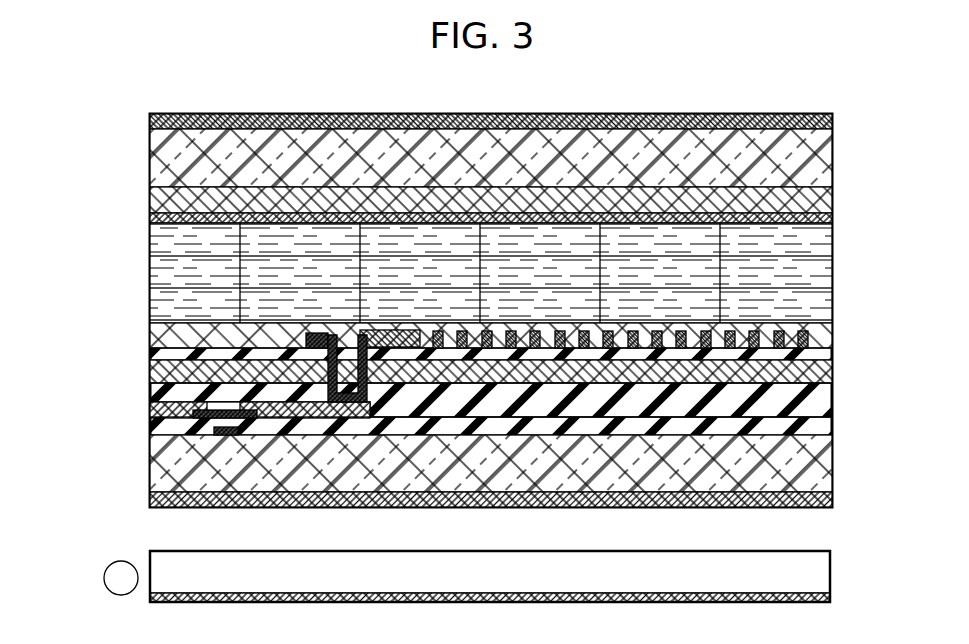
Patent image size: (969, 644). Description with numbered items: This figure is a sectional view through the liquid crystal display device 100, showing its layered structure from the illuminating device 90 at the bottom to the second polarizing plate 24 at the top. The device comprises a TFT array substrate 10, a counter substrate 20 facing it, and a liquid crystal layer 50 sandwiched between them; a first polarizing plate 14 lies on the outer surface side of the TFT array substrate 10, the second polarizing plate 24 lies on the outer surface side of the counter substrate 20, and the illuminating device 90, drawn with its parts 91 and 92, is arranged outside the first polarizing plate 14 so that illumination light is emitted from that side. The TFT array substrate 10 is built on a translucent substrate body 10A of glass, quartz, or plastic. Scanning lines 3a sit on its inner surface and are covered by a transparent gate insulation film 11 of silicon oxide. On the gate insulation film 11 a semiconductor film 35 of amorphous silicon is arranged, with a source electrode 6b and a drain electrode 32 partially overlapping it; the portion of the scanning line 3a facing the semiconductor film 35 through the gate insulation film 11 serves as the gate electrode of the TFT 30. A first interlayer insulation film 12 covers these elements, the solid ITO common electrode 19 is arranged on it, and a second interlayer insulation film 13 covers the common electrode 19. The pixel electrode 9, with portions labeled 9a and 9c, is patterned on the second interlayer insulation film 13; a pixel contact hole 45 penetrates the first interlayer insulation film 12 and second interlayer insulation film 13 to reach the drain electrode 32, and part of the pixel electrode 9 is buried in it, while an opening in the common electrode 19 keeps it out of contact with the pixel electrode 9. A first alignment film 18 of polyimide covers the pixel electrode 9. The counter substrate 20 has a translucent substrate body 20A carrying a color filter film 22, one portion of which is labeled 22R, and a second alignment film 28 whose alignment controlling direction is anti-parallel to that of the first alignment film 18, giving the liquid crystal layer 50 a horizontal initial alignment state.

The liquid crystal display device 100 is at (657, 104).
The second polarizing plate 24 is at (833, 119).
The substrate body 20A is at (833, 164).
The counter substrate 20 is at (527, 172).
The color filter film 22 is at (551, 200).
The red color filter 22R is at (824, 203).
The second alignment film 28 is at (826, 222).
The liquid crystal layer 50 is at (833, 273).
The first alignment film 18 is at (827, 336).
The second interlayer insulation film 13 is at (829, 353).
The first interlayer insulation film 12 is at (829, 398).
The gate insulation film 11 is at (829, 429).
The substrate body 10A is at (822, 463).
The first polarizing plate 14 is at (829, 504).
The TFT array substrate 10 is at (506, 405).
The source electrode 6b is at (170, 404).
The semiconductor film 35 is at (225, 404).
The common electrode 19 is at (262, 374).
The pixel electrode portion 9a is at (322, 332).
The pixel contact hole 45 is at (349, 343).
The pixel electrode 9 is at (461, 324).
The pixel electrode branch 9c is at (651, 330).
The TFT 30 is at (193, 448).
The scanning line 3a is at (230, 437).
The drain electrode 32 is at (266, 412).
The light guide plate 91 is at (822, 572).
The reflective sheet 92 is at (522, 599).
The illuminating device 90 is at (521, 580).